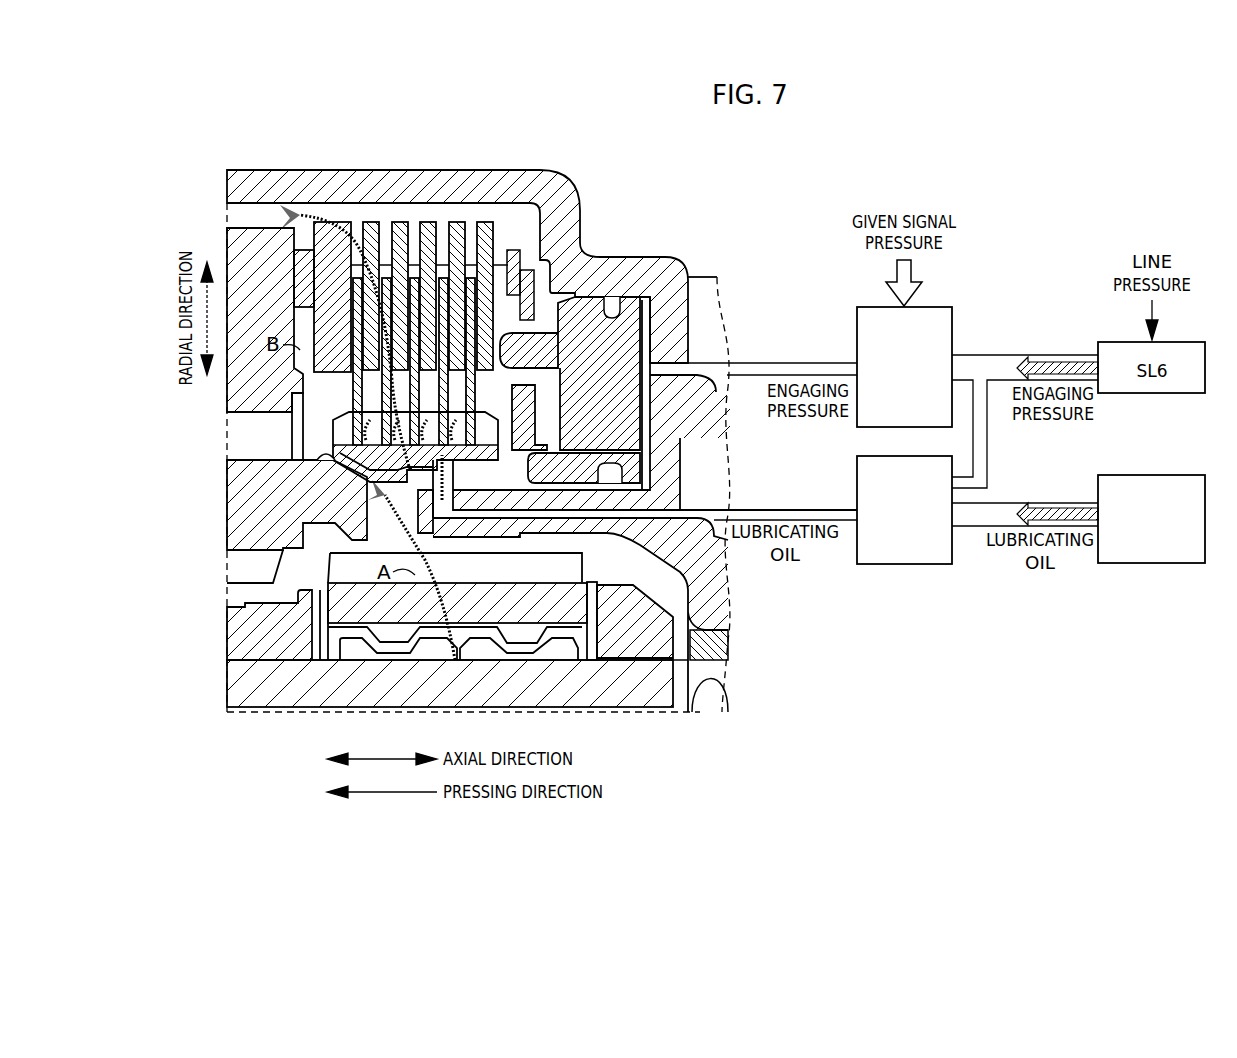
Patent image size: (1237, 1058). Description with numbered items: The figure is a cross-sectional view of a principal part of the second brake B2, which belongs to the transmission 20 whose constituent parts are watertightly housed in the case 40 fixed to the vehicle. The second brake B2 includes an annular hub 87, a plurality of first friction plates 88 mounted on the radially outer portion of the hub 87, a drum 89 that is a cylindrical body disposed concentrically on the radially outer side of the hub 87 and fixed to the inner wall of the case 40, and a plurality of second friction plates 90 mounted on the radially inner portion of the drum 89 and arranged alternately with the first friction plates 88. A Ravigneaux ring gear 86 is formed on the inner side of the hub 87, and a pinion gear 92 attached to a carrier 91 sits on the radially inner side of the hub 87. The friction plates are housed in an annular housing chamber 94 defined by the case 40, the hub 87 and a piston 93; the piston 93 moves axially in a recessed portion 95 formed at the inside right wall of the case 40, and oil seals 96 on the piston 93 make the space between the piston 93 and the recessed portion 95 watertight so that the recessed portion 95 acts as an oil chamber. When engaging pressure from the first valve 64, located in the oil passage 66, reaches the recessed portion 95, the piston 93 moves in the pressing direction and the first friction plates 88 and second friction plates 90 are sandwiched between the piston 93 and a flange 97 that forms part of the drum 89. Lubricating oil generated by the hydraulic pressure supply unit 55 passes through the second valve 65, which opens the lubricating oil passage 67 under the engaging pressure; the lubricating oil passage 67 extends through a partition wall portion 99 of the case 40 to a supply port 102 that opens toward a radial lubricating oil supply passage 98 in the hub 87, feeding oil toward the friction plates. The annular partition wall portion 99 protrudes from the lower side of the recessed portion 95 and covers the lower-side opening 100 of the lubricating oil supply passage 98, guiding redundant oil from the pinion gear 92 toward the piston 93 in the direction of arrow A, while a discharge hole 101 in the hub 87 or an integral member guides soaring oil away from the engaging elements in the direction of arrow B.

The transmission 20 is at (722, 218).
The case 40 is at (373, 178).
The hydraulic pressure supply unit 55 is at (1185, 475).
The first valve 64 is at (935, 307).
The second valve 65 is at (938, 564).
The oil passage 66 is at (786, 362).
The lubricating oil passage 67 is at (786, 509).
The Ravigneaux ring gear 86 is at (250, 568).
The hub 87 is at (343, 430).
The first friction plates 88 is at (486, 232).
The drum 89 is at (295, 262).
The second friction plates 90 is at (414, 285).
The carrier 91 is at (585, 700).
The pinion gear 92 is at (320, 575).
The piston 93 is at (655, 338).
The housing chamber 94 is at (560, 235).
The recessed portion 95 is at (680, 420).
The oil seals 96 is at (640, 475).
The flange 97 is at (325, 232).
The lubricating oil supply passage 98 is at (443, 456).
The partition wall portion 99 is at (382, 505).
The lower-side opening 100 is at (460, 500).
The discharge hole 101 is at (362, 465).
The supply port 102 is at (447, 520).
The second brake B2 is at (650, 212).